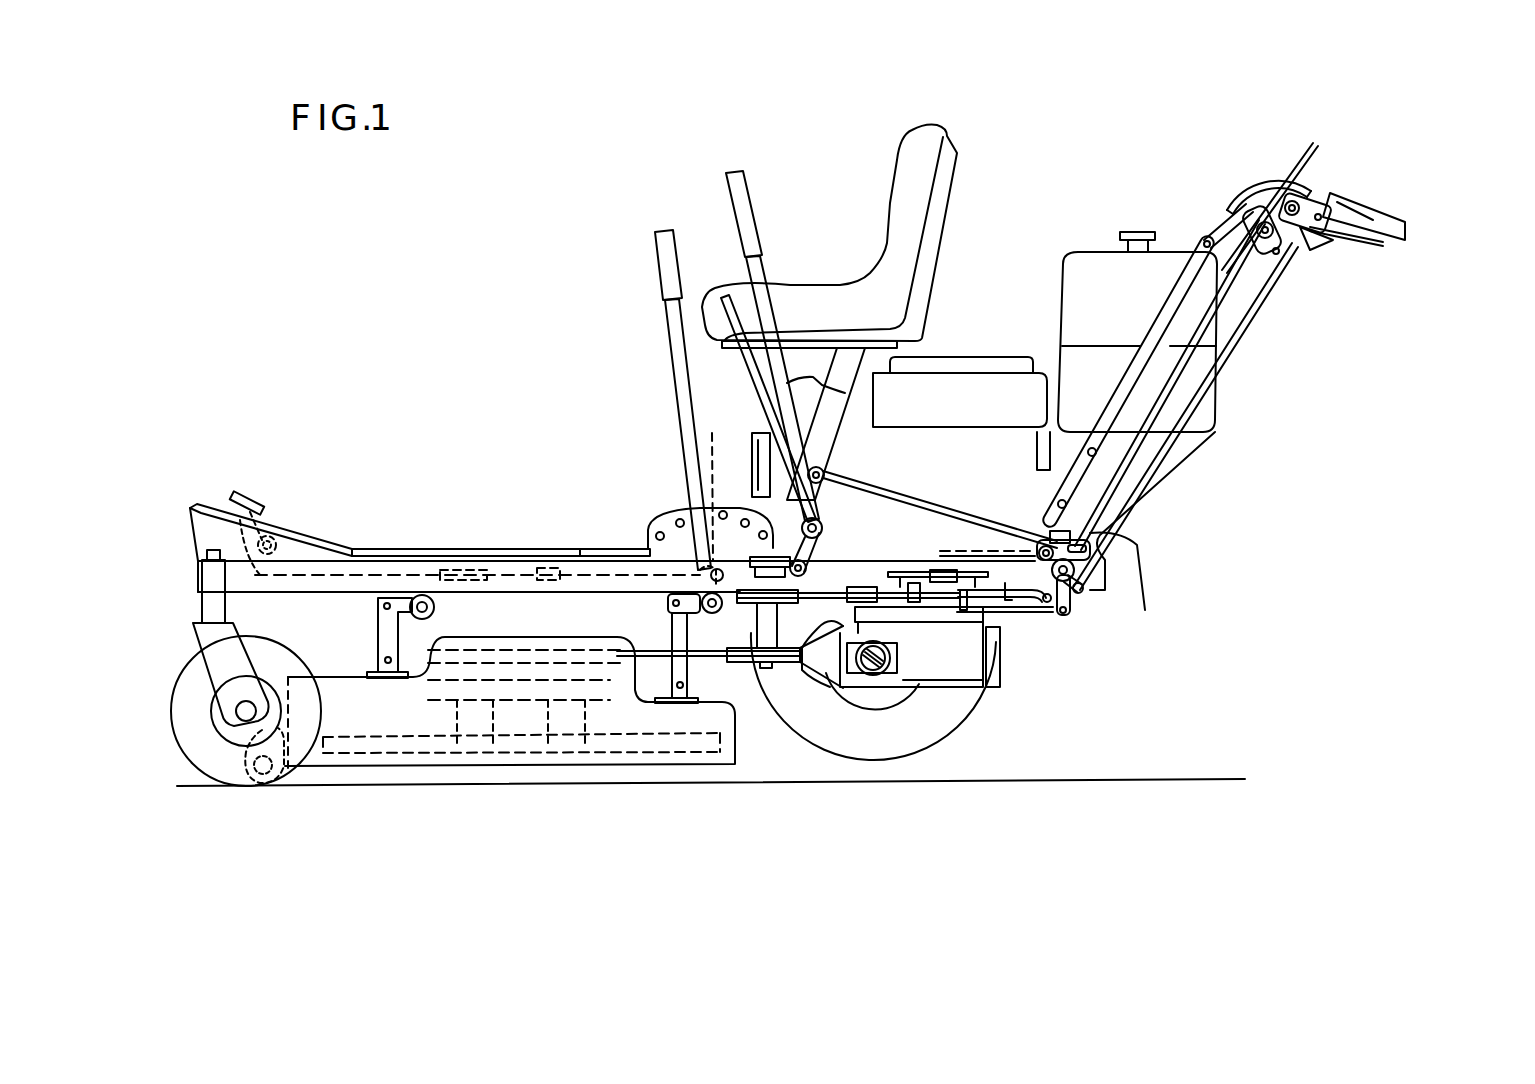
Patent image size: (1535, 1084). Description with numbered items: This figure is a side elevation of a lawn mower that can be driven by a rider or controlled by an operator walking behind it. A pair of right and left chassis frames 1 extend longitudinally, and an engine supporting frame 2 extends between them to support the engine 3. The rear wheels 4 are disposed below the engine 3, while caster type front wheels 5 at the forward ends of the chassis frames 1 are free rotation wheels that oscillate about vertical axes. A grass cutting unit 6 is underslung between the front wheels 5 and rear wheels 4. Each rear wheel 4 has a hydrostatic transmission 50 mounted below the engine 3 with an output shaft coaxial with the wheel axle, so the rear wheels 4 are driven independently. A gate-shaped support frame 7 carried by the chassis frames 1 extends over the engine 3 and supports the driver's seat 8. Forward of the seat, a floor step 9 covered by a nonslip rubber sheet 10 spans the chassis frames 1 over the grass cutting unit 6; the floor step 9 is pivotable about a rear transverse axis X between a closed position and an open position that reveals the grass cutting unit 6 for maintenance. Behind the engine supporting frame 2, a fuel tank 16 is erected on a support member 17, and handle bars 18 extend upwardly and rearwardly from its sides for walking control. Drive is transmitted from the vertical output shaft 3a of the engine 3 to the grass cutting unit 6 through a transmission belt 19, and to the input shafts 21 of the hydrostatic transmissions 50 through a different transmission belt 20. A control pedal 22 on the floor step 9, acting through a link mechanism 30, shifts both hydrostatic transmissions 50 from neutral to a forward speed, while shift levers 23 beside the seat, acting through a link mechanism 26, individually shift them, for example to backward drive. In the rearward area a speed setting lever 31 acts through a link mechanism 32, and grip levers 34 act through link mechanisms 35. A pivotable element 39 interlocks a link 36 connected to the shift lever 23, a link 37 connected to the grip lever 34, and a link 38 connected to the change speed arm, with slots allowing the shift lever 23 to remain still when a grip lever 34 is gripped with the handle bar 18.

The chassis frame 1 is at (310, 560).
The engine supporting frame 2 is at (757, 513).
The engine 3 is at (973, 353).
The vertical output shaft 3a is at (987, 556).
The rear wheel 4 is at (997, 713).
The front wheel 5 is at (203, 787).
The grass cutting unit 6 is at (700, 762).
The support frame 7 is at (855, 393).
The driver's seat 8 is at (897, 168).
The floor step 9 is at (583, 550).
The nonslip rubber sheet 10 is at (517, 548).
The fuel tank 16 is at (1077, 252).
The support member 17 is at (1175, 470).
The handle bar 18 is at (1205, 240).
The transmission belt 19 is at (835, 573).
The transmission belt 20 is at (898, 556).
The input shaft 21 is at (913, 592).
The control pedal 22 is at (245, 500).
The shift lever 23 is at (727, 200).
The link mechanism 26 is at (933, 500).
The link mechanism 30 is at (360, 578).
The speed setting lever 31 is at (1303, 153).
The link mechanism 32 is at (1228, 210).
The grip lever 34 is at (1375, 243).
The link mechanism 35 is at (1268, 297).
The link 36 is at (1093, 537).
The link 37 is at (1052, 530).
The link 38 is at (1033, 617).
The pivotable element 39 is at (1074, 570).
The hydrostatic transmission 50 is at (924, 688).
The transverse axis X is at (712, 487).